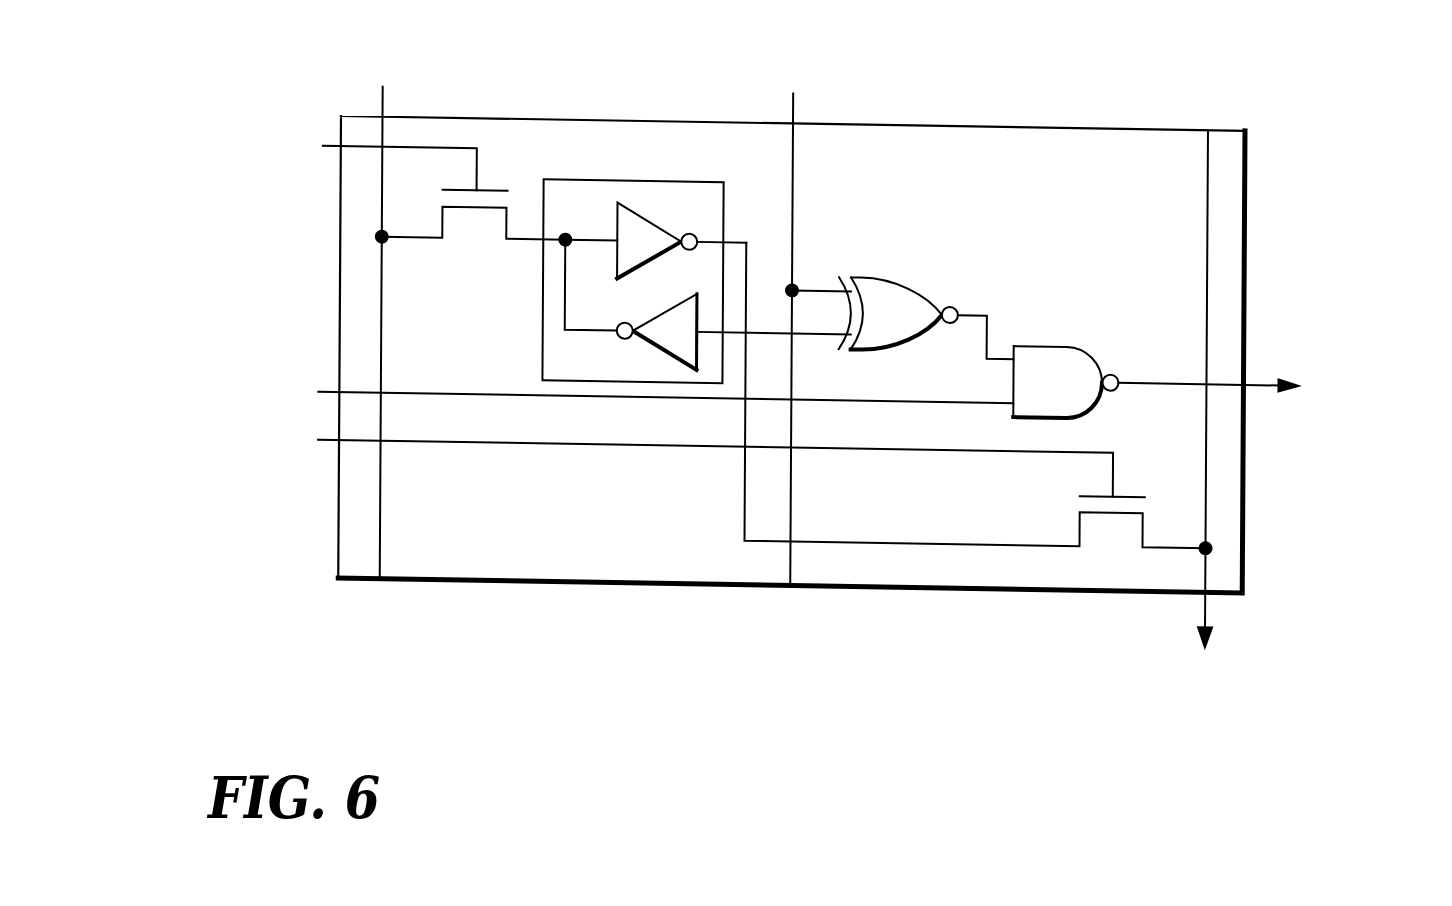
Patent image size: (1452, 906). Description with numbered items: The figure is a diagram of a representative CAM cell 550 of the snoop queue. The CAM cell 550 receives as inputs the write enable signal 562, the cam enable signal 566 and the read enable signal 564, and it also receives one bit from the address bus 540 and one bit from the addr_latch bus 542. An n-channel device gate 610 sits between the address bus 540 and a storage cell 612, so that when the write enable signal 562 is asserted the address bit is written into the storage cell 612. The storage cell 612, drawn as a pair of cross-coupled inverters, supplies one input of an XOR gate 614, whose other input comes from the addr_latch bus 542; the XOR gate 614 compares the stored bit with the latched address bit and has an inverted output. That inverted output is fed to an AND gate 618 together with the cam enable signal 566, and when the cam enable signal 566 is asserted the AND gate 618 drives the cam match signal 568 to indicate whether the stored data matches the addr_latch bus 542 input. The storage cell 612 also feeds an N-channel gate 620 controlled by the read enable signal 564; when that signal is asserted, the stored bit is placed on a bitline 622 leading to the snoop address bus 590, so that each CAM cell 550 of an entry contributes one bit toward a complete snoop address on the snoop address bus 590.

The address bus 540 is at (383, 305).
The addr_latch bus 542 is at (791, 312).
The CAM cell 550 is at (1187, 153).
The write enable signal 562 is at (324, 161).
The read enable signal 564 is at (630, 461).
The cam enable signal 566 is at (587, 384).
The cam match signal 568 is at (1274, 401).
The snoop address bus 590 is at (1203, 647).
The n-channel device gate 610 is at (492, 234).
The storage cell 612 is at (581, 369).
The XOR gate 614 is at (908, 316).
The AND gate 618 is at (1067, 381).
The N-channel gate 620 is at (1128, 530).
The bitline 622 is at (1208, 458).